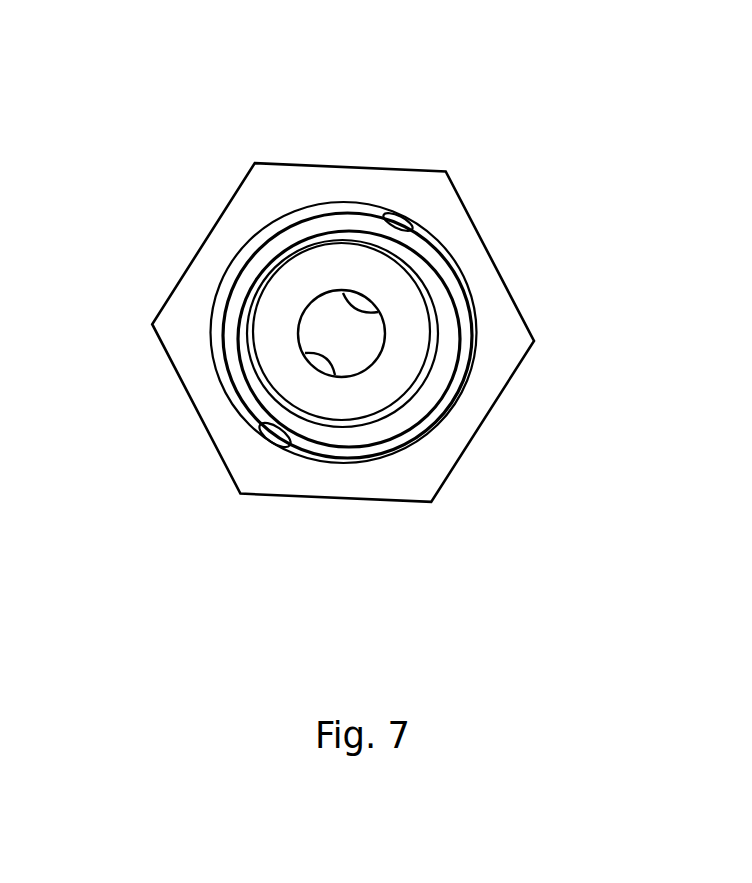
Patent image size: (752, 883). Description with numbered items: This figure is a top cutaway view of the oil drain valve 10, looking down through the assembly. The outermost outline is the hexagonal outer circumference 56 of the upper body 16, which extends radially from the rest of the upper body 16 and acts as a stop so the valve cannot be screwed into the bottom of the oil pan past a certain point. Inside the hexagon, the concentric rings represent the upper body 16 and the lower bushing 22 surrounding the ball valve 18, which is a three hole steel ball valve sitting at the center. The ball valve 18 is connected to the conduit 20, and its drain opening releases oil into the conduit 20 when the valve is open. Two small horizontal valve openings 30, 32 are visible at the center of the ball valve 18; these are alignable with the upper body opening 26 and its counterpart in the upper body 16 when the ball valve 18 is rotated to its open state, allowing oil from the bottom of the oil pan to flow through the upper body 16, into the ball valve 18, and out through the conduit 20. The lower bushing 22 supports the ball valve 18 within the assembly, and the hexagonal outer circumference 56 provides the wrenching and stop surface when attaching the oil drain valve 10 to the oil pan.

The oil drain valve 10 is at (178, 107).
The upper body 16 is at (445, 259).
The ball valve 18 is at (327, 317).
The conduit 20 is at (277, 443).
The lower bushing 22 is at (452, 336).
The upper body opening 26 is at (408, 220).
The valve opening 30 is at (366, 308).
The valve opening 32 is at (320, 361).
The hexagonal outer circumference 56 is at (498, 312).